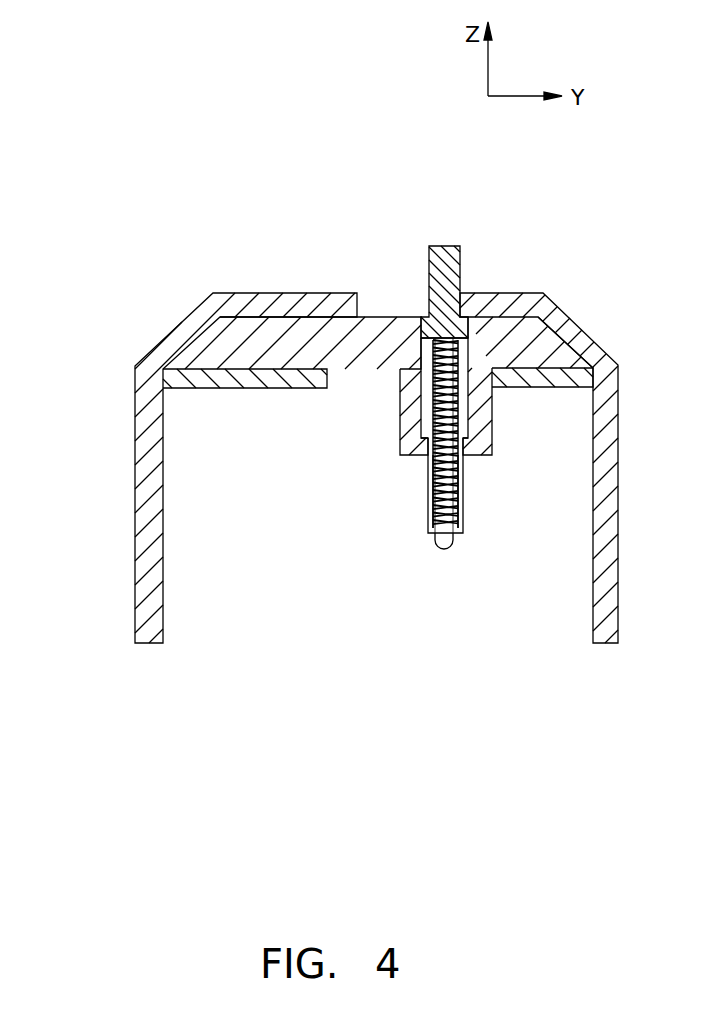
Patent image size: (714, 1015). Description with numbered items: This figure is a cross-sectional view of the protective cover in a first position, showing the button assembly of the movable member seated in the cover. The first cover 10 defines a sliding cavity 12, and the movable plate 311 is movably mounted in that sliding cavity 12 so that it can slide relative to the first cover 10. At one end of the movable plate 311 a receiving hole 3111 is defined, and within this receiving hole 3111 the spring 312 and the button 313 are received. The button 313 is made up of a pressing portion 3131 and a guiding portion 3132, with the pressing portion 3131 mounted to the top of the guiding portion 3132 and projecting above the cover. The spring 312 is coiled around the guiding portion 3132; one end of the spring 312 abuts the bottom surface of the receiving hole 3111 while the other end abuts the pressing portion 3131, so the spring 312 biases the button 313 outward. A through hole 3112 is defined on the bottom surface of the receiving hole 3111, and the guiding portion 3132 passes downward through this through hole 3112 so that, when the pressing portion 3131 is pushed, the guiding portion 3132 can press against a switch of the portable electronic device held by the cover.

The first cover 10 is at (158, 493).
The sliding cavity 12 is at (220, 350).
The movable plate 311 is at (385, 330).
The receiving hole 3111 is at (430, 383).
The spring 312 is at (430, 483).
The button 313 is at (450, 236).
The pressing portion 3131 is at (443, 278).
The guiding portion 3132 is at (447, 540).
The through hole 3112 is at (430, 533).